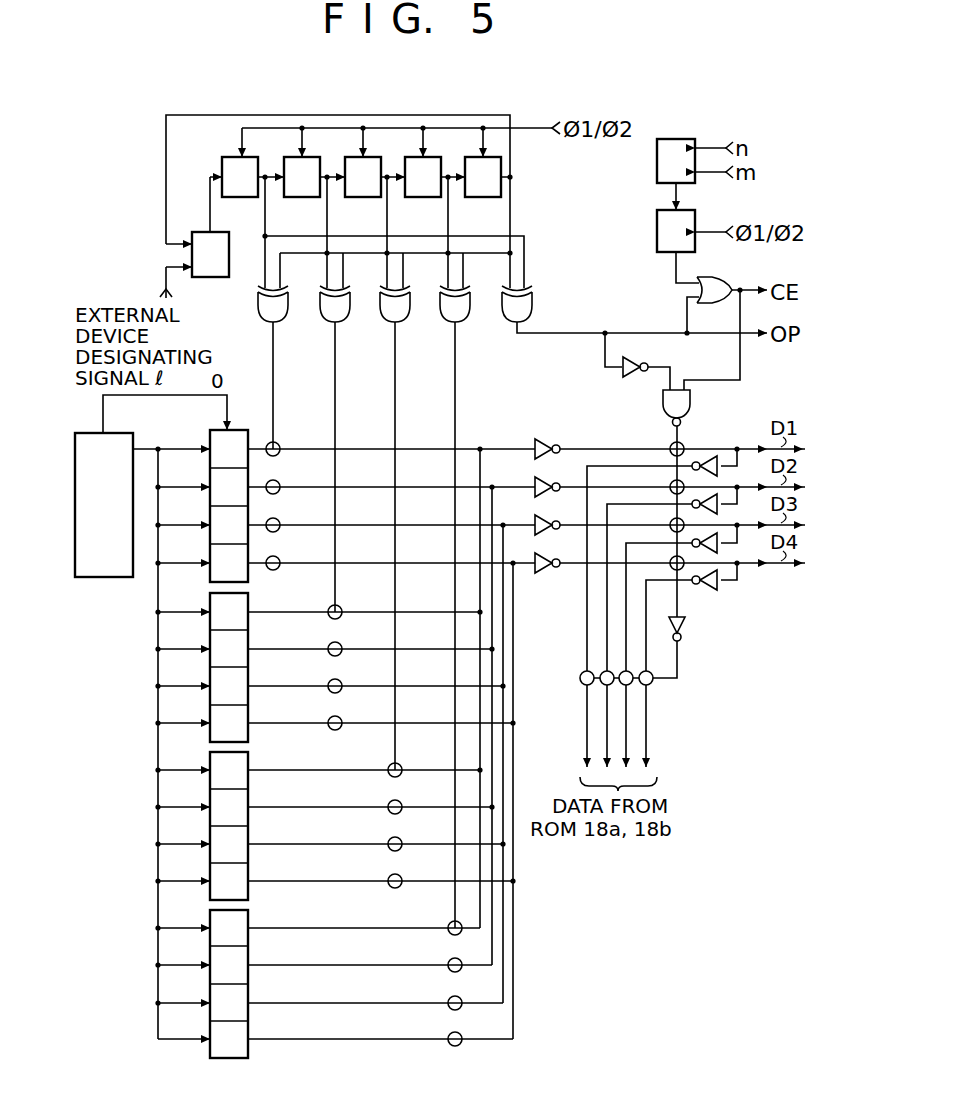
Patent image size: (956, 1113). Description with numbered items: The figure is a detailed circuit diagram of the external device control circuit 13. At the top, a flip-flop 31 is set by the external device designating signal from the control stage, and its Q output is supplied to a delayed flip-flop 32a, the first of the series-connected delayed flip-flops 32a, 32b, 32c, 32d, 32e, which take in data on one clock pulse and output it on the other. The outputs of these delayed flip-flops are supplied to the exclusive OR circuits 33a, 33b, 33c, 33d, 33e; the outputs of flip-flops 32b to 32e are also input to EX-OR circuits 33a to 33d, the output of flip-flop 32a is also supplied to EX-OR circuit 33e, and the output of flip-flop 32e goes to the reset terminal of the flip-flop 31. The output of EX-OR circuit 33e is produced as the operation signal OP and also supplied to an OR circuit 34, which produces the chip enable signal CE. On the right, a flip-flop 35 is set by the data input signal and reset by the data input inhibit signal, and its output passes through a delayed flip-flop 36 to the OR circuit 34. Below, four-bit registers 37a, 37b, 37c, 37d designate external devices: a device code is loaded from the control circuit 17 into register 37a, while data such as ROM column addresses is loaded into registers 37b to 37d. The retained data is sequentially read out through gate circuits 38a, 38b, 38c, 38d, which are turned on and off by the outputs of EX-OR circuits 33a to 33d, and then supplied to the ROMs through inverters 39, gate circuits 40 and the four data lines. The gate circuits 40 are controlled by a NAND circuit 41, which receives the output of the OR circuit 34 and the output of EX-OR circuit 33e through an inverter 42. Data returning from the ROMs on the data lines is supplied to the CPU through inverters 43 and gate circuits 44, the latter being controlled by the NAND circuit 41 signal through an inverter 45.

The external device control circuit 13 is at (634, 108).
The control circuit 17 is at (95, 578).
The flip-flop 31 is at (222, 278).
The delayed flip-flop 32a is at (228, 158).
The delayed flip-flop 32b is at (296, 196).
The delayed flip-flop 32c is at (358, 196).
The delayed flip-flop 32d is at (418, 196).
The delayed flip-flop 32e is at (480, 196).
The exclusive OR circuit 33a is at (286, 314).
The exclusive OR circuit 33b is at (348, 314).
The exclusive OR circuit 33c is at (408, 314).
The exclusive OR circuit 33d is at (468, 314).
The exclusive OR circuit 33e is at (530, 301).
The OR circuit 34 is at (720, 282).
The flip-flop 35 is at (656, 170).
The delayed flip-flop 36 is at (656, 238).
The register 37a is at (210, 582).
The register 37b is at (210, 740).
The register 37c is at (210, 897).
The register 37d is at (250, 998).
The gate circuit 38a is at (318, 426).
The gate circuit 38b is at (325, 605).
The gate circuit 38c is at (385, 762).
The gate circuit 38d is at (445, 920).
The inverters 39 is at (559, 425).
The gate circuits 40 is at (728, 427).
The NAND circuit 41 is at (662, 402).
The inverter 42 is at (642, 356).
The inverters 43 is at (709, 593).
The gate circuits 44 is at (660, 692).
The inverter 45 is at (683, 627).